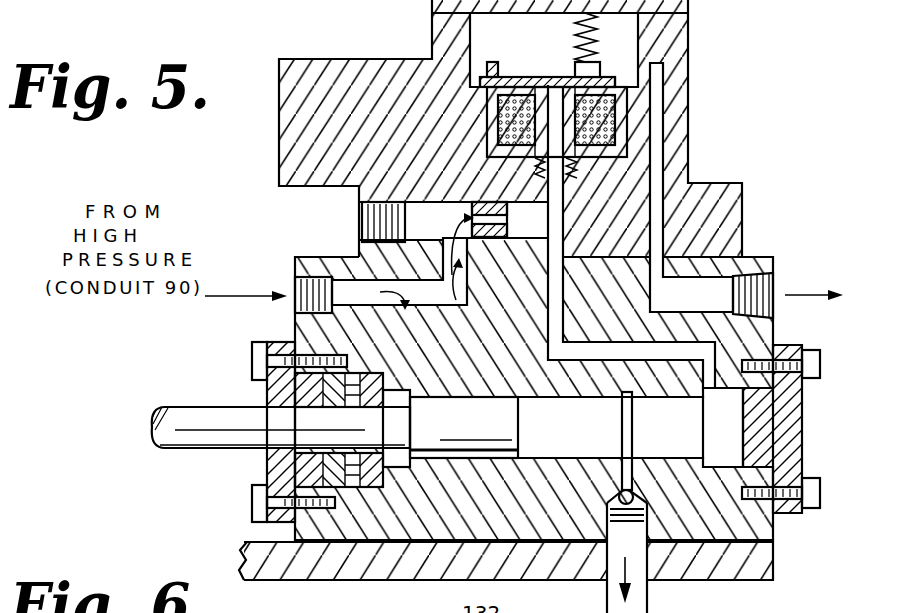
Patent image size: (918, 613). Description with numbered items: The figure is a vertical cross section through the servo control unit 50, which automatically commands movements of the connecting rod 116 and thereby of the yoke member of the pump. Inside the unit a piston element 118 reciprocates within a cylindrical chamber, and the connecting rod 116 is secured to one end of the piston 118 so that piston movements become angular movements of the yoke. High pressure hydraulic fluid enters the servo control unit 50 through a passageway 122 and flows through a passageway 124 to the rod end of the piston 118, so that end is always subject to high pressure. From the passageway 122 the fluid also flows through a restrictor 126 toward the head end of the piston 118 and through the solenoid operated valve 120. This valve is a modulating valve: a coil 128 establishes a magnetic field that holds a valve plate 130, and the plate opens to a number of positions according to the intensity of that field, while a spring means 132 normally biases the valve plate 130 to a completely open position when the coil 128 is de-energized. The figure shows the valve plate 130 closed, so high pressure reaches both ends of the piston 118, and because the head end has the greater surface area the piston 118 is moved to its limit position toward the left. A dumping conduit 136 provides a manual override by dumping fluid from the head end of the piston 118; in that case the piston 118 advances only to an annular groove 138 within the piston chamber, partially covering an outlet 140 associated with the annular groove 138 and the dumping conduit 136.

The servo control unit 50 is at (823, 186).
The connecting rod 116 is at (186, 444).
The piston element 118 is at (482, 428).
The solenoid operated valve 120 is at (480, 104).
The passageway 122 is at (343, 283).
The passageway 124 is at (398, 334).
The restrictor 126 is at (495, 201).
The coil 128 is at (578, 131).
The valve plate 130 is at (527, 76).
The spring means 132 is at (597, 39).
The dumping conduit 136 is at (648, 608).
The annular groove 138 is at (645, 396).
The outlet 140 is at (622, 450).